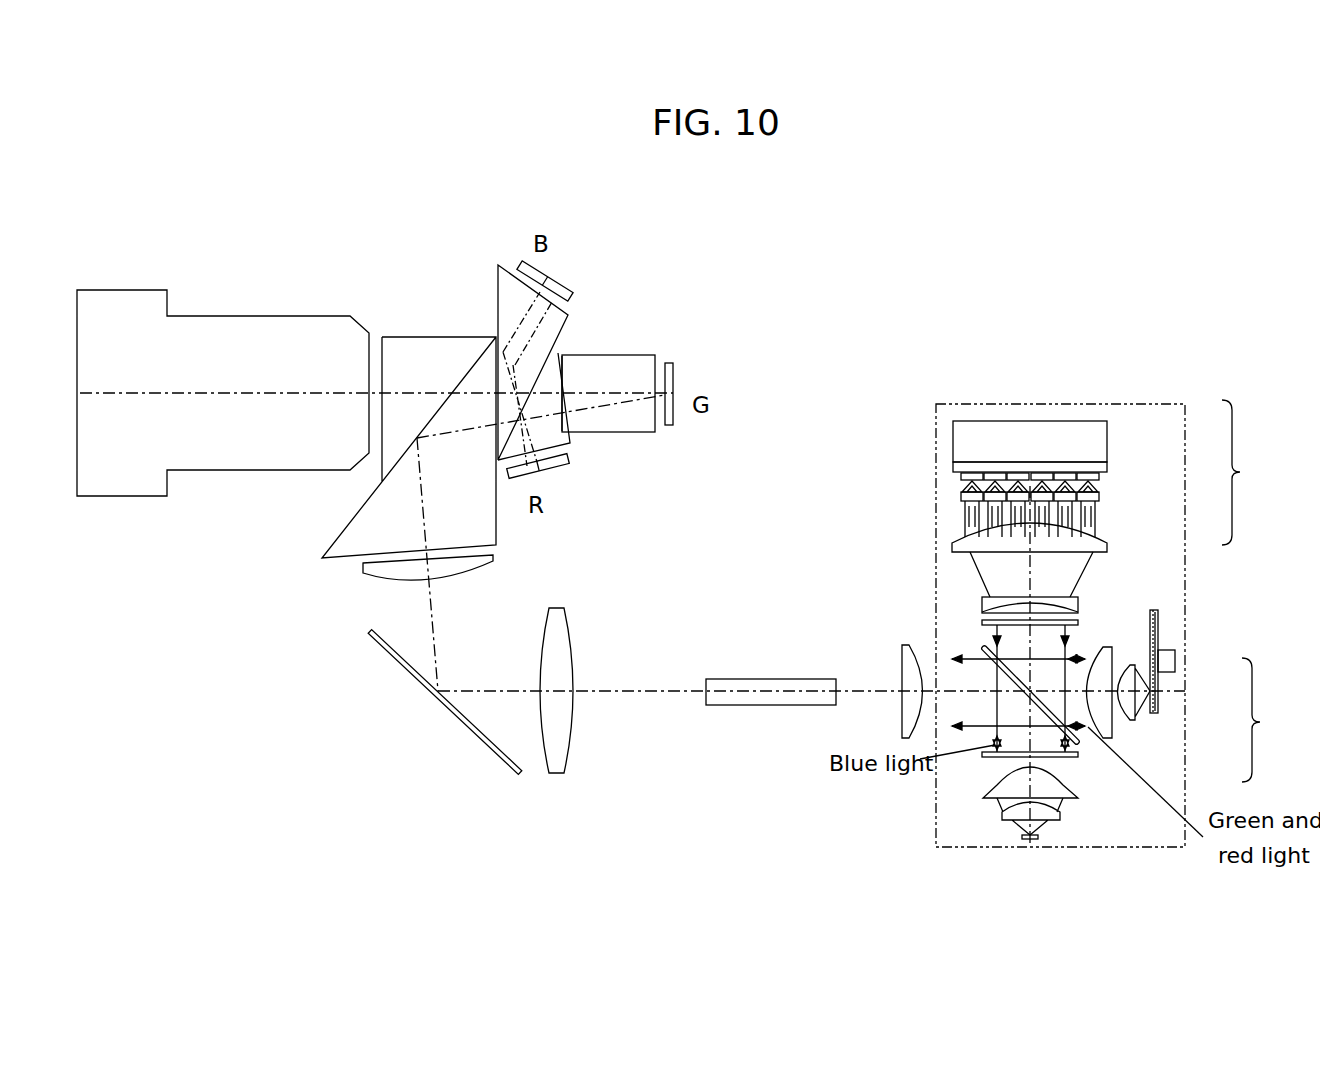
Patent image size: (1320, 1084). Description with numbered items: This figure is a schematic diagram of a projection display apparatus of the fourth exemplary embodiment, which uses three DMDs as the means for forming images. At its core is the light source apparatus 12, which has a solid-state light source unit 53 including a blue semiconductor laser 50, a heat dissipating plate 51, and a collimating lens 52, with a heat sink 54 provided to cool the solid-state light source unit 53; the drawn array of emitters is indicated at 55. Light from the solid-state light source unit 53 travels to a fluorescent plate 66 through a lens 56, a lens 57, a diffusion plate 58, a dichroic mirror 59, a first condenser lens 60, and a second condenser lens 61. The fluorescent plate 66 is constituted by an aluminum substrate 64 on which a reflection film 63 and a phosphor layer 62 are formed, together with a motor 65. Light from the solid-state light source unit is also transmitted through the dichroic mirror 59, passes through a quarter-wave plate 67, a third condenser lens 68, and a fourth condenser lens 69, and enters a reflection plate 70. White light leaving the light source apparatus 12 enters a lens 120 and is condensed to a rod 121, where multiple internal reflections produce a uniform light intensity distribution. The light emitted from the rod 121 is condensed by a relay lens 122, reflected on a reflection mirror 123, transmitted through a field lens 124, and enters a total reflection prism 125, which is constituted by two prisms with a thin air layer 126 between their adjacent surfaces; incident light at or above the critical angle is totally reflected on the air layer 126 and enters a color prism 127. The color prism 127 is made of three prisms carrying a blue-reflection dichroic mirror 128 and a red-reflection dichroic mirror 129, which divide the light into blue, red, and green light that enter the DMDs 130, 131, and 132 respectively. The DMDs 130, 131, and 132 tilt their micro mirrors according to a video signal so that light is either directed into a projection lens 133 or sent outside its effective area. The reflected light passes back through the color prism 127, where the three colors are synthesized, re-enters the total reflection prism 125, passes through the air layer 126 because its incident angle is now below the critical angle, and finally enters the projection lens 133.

The light source apparatus 12 is at (1163, 845).
The blue semiconductor laser 50 is at (1100, 478).
The heat dissipating plate 51 is at (1093, 458).
The collimating lens 52 is at (1097, 497).
The solid-state light source unit 53 is at (1114, 452).
The heat sink 54 is at (1098, 421).
The collimator lens array 55 is at (968, 515).
The lens 56 is at (952, 545).
The lens 57 is at (982, 610).
The diffusion plate 58 is at (982, 622).
The dichroic mirror 59 is at (985, 648).
The first condenser lens 60 is at (1104, 660).
The second condenser lens 61 is at (1132, 665).
The phosphor layer 62 is at (1155, 712).
The reflection film 63 is at (1155, 707).
The aluminum substrate 64 is at (1158, 703).
The motor 65 is at (1168, 668).
The fluorescent plate 66 is at (1222, 696).
The quarter-wave plate 67 is at (983, 755).
The third condenser lens 68 is at (985, 797).
The fourth condenser lens 69 is at (1007, 813).
The reflection plate 70 is at (1037, 838).
The lens 120 is at (903, 717).
The rod 121 is at (723, 702).
The relay lens 122 is at (568, 753).
The reflection mirror 123 is at (500, 763).
The field lens 124 is at (495, 559).
The total reflection prism 125 is at (378, 520).
The air layer 126 is at (463, 375).
The color prism 127 is at (633, 427).
The blue-reflection dichroic mirror 128 is at (560, 355).
The red-reflection dichroic mirror 129 is at (563, 385).
The DMD 130 is at (565, 292).
The DMD 131 is at (562, 468).
The DMD 132 is at (673, 373).
The projection lens 133 is at (252, 313).